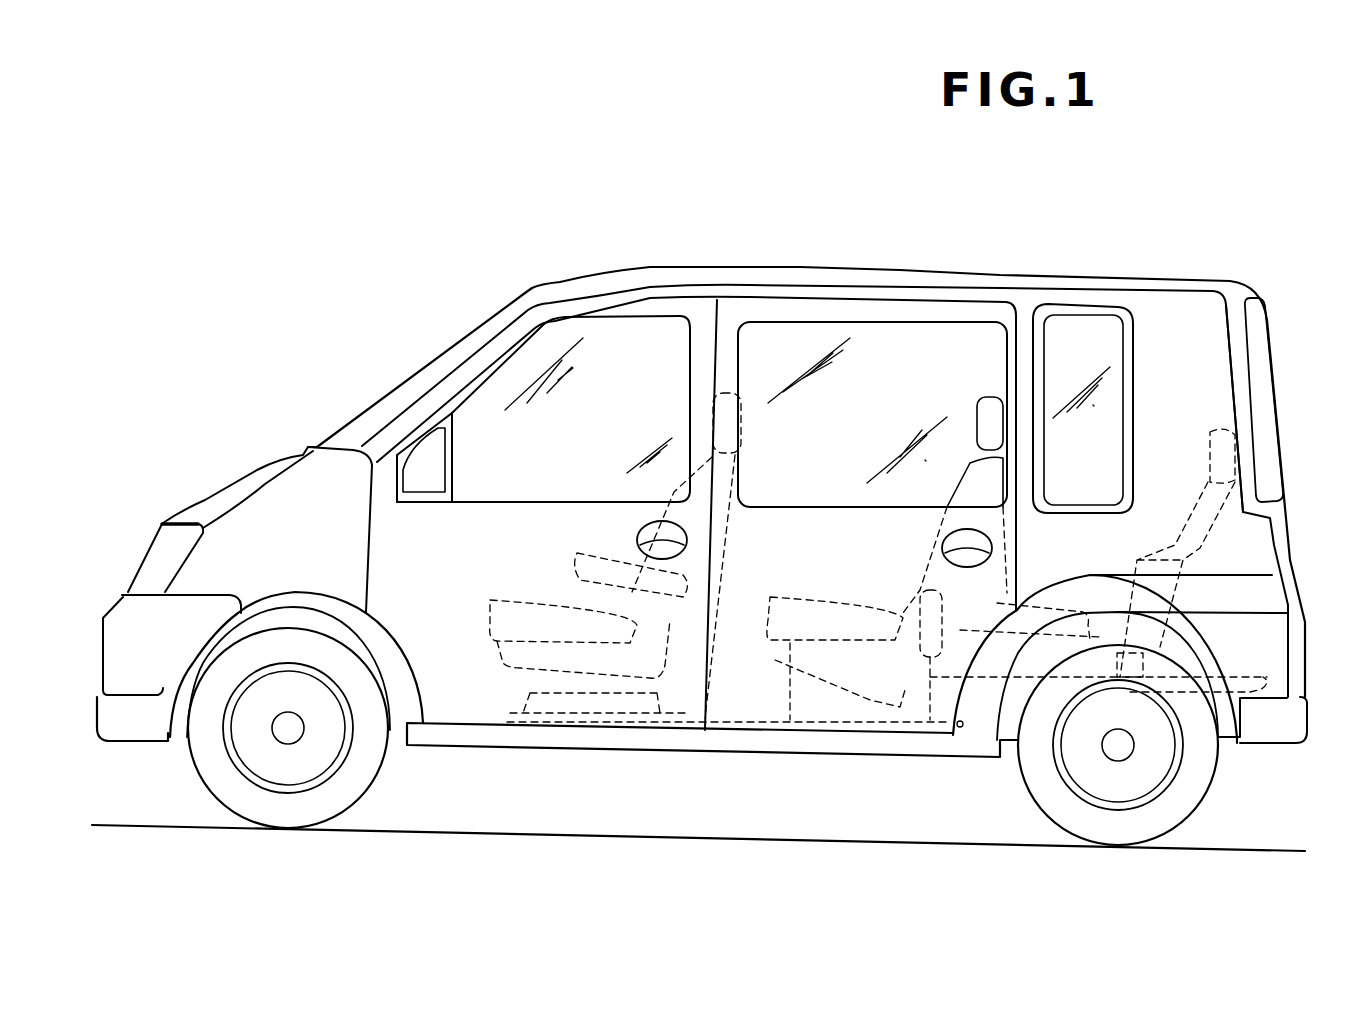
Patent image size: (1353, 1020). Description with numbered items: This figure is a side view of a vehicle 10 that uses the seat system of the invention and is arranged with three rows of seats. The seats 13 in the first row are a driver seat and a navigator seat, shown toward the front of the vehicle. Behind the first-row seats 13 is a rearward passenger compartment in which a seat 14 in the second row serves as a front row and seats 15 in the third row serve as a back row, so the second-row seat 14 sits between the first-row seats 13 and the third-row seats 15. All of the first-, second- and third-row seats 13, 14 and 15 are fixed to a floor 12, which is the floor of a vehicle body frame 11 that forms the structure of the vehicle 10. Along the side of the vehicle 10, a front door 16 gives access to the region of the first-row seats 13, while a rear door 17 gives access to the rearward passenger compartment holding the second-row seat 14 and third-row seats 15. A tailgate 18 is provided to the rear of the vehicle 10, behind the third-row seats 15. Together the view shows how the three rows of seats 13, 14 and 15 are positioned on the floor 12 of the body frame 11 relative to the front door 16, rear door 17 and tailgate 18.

The vehicle 10 is at (478, 262).
The vehicle body frame 11 is at (264, 462).
The floor 12 is at (520, 753).
The first-row seats 13 is at (580, 537).
The second-row seat 14 is at (850, 557).
The third-row seats 15 is at (1187, 445).
The front door 16 is at (666, 310).
The rear door 17 is at (797, 303).
The tailgate 18 is at (1281, 315).